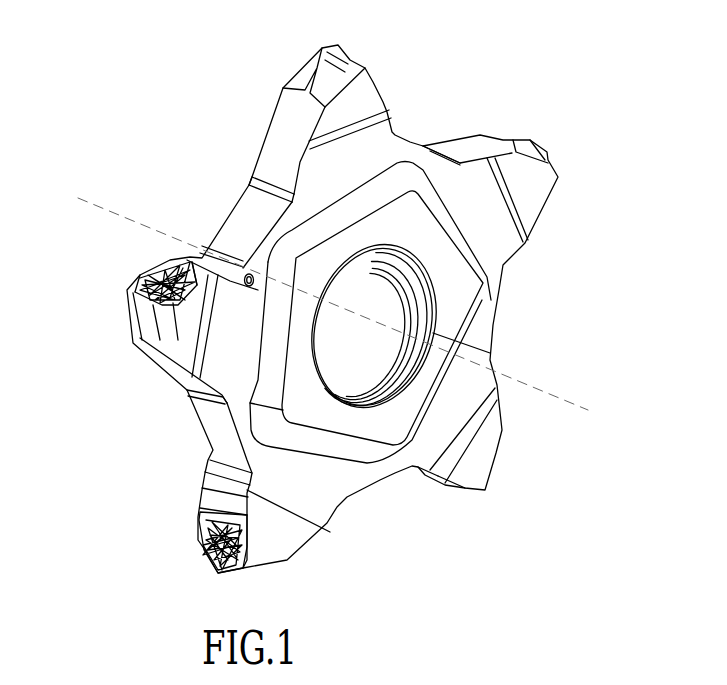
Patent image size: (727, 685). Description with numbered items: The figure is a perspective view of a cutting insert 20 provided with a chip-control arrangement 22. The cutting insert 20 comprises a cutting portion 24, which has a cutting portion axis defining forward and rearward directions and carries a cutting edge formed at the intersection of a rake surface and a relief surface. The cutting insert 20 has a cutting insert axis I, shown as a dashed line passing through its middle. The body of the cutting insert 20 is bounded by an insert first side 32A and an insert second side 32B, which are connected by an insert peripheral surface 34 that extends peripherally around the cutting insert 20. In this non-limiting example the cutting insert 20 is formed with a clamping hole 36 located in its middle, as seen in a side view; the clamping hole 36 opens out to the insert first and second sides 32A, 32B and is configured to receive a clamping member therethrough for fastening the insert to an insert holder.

The cutting insert 20 is at (571, 52).
The chip-control arrangement 22 is at (381, 60).
The cutting portion 24 is at (387, 80).
The insert first side 32A is at (491, 237).
The insert second side 32B is at (256, 140).
The insert peripheral surface 34 is at (237, 218).
The clamping hole 36 is at (440, 338).
The cutting insert axis I is at (336, 316).